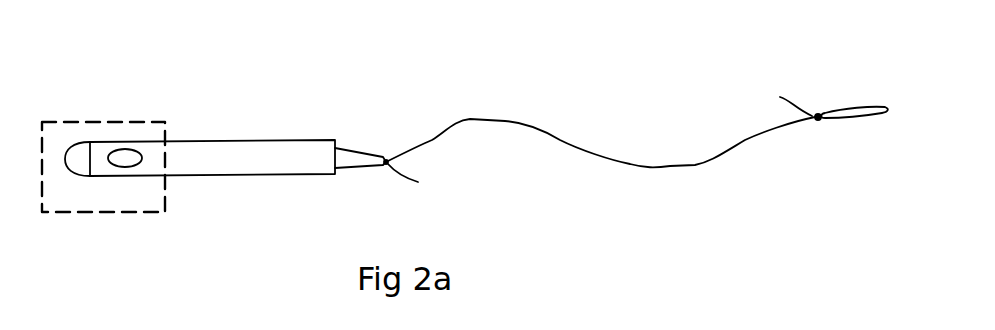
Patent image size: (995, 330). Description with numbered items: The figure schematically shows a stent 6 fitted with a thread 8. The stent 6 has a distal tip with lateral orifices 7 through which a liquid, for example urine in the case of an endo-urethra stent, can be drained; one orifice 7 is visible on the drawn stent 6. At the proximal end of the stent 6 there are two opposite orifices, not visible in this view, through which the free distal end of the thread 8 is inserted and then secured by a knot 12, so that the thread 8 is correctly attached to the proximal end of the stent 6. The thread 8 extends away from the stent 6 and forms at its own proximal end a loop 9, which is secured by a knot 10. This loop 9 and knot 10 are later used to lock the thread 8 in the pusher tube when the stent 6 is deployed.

The stent 6 is at (200, 127).
The orifice 7 is at (123, 166).
The thread 8 is at (623, 188).
The loop 9 is at (842, 103).
The knot 10 is at (815, 119).
The knot 12 is at (387, 160).